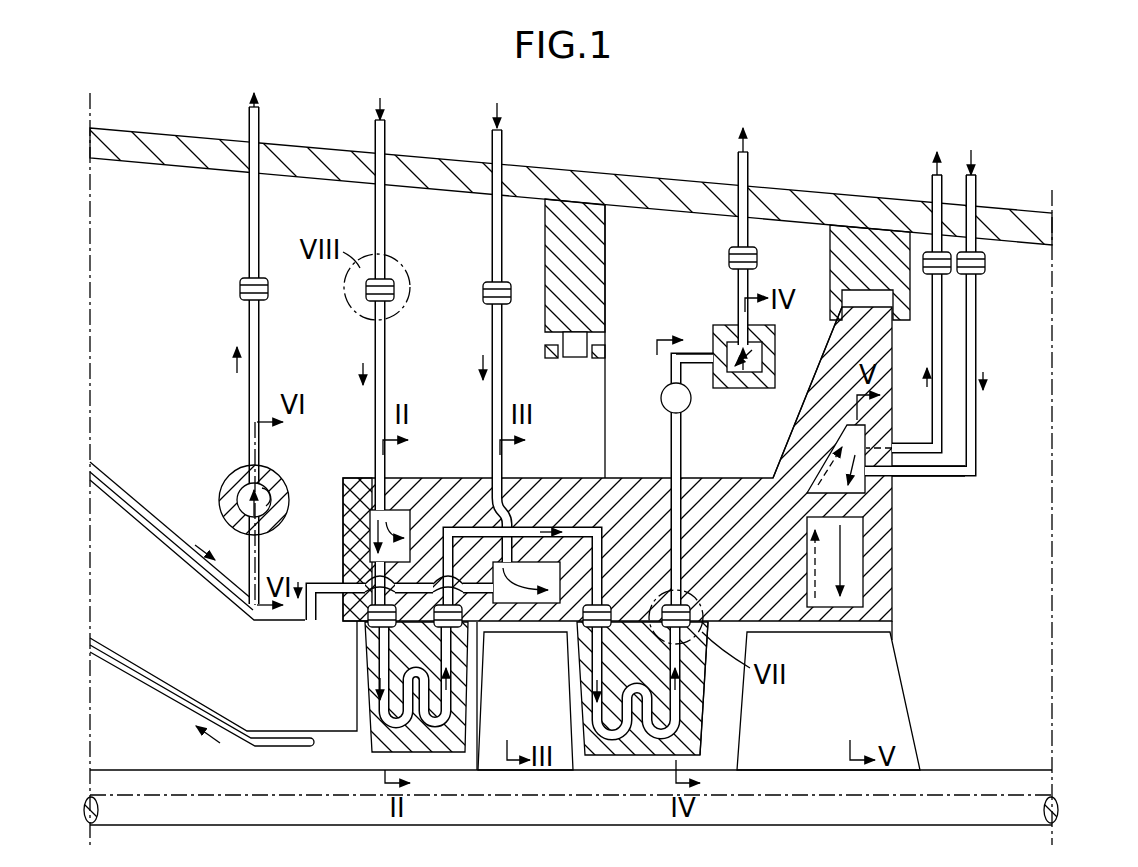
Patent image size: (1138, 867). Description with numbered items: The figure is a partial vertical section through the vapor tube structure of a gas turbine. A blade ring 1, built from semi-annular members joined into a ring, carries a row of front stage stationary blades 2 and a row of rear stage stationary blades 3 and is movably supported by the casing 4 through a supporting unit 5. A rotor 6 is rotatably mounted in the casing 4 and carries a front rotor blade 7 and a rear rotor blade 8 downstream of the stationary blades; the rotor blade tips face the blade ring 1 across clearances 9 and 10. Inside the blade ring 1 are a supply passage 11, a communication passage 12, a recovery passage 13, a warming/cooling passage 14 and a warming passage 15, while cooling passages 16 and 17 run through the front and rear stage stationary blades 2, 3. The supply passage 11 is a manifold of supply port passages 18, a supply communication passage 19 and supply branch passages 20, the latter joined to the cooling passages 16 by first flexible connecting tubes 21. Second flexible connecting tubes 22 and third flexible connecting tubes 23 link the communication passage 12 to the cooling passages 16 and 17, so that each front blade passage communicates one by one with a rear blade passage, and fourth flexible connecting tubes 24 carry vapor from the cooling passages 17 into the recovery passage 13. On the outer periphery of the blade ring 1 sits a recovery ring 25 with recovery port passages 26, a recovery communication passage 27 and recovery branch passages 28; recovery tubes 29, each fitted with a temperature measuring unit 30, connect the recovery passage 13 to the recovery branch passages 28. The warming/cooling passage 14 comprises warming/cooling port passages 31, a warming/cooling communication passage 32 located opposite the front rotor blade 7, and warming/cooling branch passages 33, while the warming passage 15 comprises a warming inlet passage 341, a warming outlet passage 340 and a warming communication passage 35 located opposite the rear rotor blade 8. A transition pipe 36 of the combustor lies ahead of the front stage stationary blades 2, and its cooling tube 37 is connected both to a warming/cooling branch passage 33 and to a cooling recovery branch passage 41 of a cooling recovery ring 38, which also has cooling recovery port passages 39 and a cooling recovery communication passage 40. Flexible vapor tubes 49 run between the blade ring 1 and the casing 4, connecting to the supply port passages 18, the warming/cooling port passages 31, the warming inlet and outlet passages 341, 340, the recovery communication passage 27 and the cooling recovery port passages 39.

The blade ring 1 is at (357, 476).
The front stage stationary blades 2 is at (372, 655).
The rear stage stationary blades 3 is at (700, 693).
The casing 4 is at (625, 178).
The supporting unit 5 is at (575, 345).
The rotor 6 is at (970, 768).
The front rotor blade 7 is at (493, 765).
The rear rotor blade 8 is at (900, 705).
The clearance 9 is at (543, 640).
The clearance 10 is at (892, 627).
The supply passage 11 is at (370, 517).
The communication passage 12 is at (450, 525).
The recovery passage 13 is at (707, 475).
The warming/cooling passage 14 is at (612, 462).
The warming passage 15 is at (857, 503).
The cooling passage 16 is at (385, 705).
The cooling passage 17 is at (705, 730).
The supply port passage 18 is at (392, 508).
The supply communication passage 19 is at (360, 483).
The supply branch passage 20 is at (365, 540).
The first flexible connecting tube 21 is at (358, 623).
The second flexible connecting tube 22 is at (480, 625).
The third flexible connecting tube 23 is at (588, 665).
The fourth flexible connecting tube 24 is at (700, 625).
The recovery ring 25 is at (760, 388).
The recovery port passage 26 is at (748, 318).
The recovery communication passage 27 is at (762, 357).
The recovery branch passage 28 is at (730, 345).
The recovery tube 29 is at (672, 370).
The temperature measuring unit 30 is at (661, 396).
The warming/cooling port passage 31 is at (497, 440).
The warming/cooling communication passage 32 is at (600, 525).
The warming/cooling branch passage 33 is at (358, 587).
The warming communication passage 35 is at (870, 427).
The transition pipe 36 is at (128, 548).
The cooling tube 37 is at (165, 530).
The cooling recovery ring 38 is at (227, 482).
The cooling recovery port passage 39 is at (265, 472).
The cooling recovery communication passage 40 is at (243, 497).
The cooling recovery branch passage 41 is at (247, 547).
The vapor tube 49 is at (238, 292).
The warming outlet passage 340 is at (957, 422).
The warming inlet passage 341 is at (892, 492).